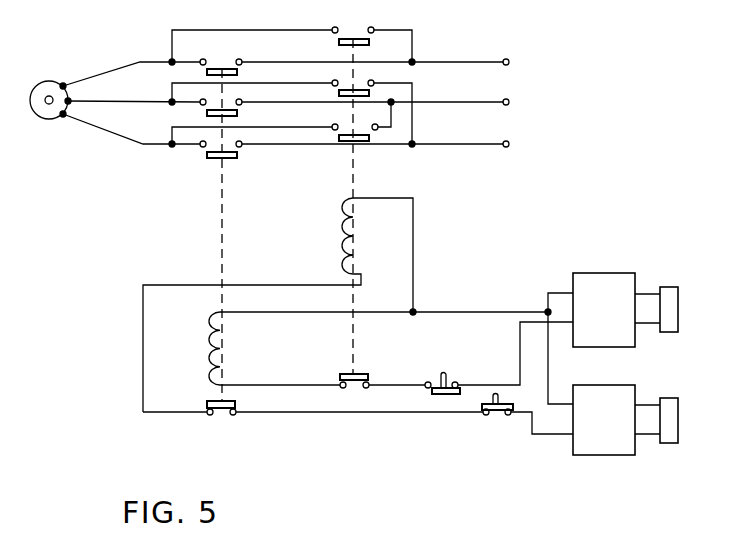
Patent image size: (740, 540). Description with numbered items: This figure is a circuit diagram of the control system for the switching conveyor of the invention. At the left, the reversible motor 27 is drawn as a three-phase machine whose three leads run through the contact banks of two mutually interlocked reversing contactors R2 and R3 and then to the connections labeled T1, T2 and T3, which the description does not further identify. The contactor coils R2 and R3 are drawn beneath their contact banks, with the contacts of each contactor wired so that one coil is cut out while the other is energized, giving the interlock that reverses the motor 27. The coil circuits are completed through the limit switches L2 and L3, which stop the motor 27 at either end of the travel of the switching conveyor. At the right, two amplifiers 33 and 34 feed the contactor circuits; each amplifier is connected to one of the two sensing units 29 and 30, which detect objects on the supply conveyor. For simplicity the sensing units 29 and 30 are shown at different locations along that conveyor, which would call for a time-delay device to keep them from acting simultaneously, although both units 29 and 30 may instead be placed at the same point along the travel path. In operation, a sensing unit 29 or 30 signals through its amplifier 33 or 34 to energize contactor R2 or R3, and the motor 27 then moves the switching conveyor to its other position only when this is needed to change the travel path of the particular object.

The reversible motor 27 is at (52, 84).
The sensing unit 29 is at (686, 284).
The sensing unit 30 is at (672, 440).
The amplifier 33 is at (586, 277).
The amplifier 34 is at (597, 453).
The reversing contactor R2 is at (333, 250).
The reversing contactor R3 is at (200, 360).
The limit switch L2 is at (432, 391).
The limit switch L3 is at (489, 417).
The terminal T1 is at (517, 62).
The terminal T2 is at (517, 102).
The terminal T3 is at (517, 144).